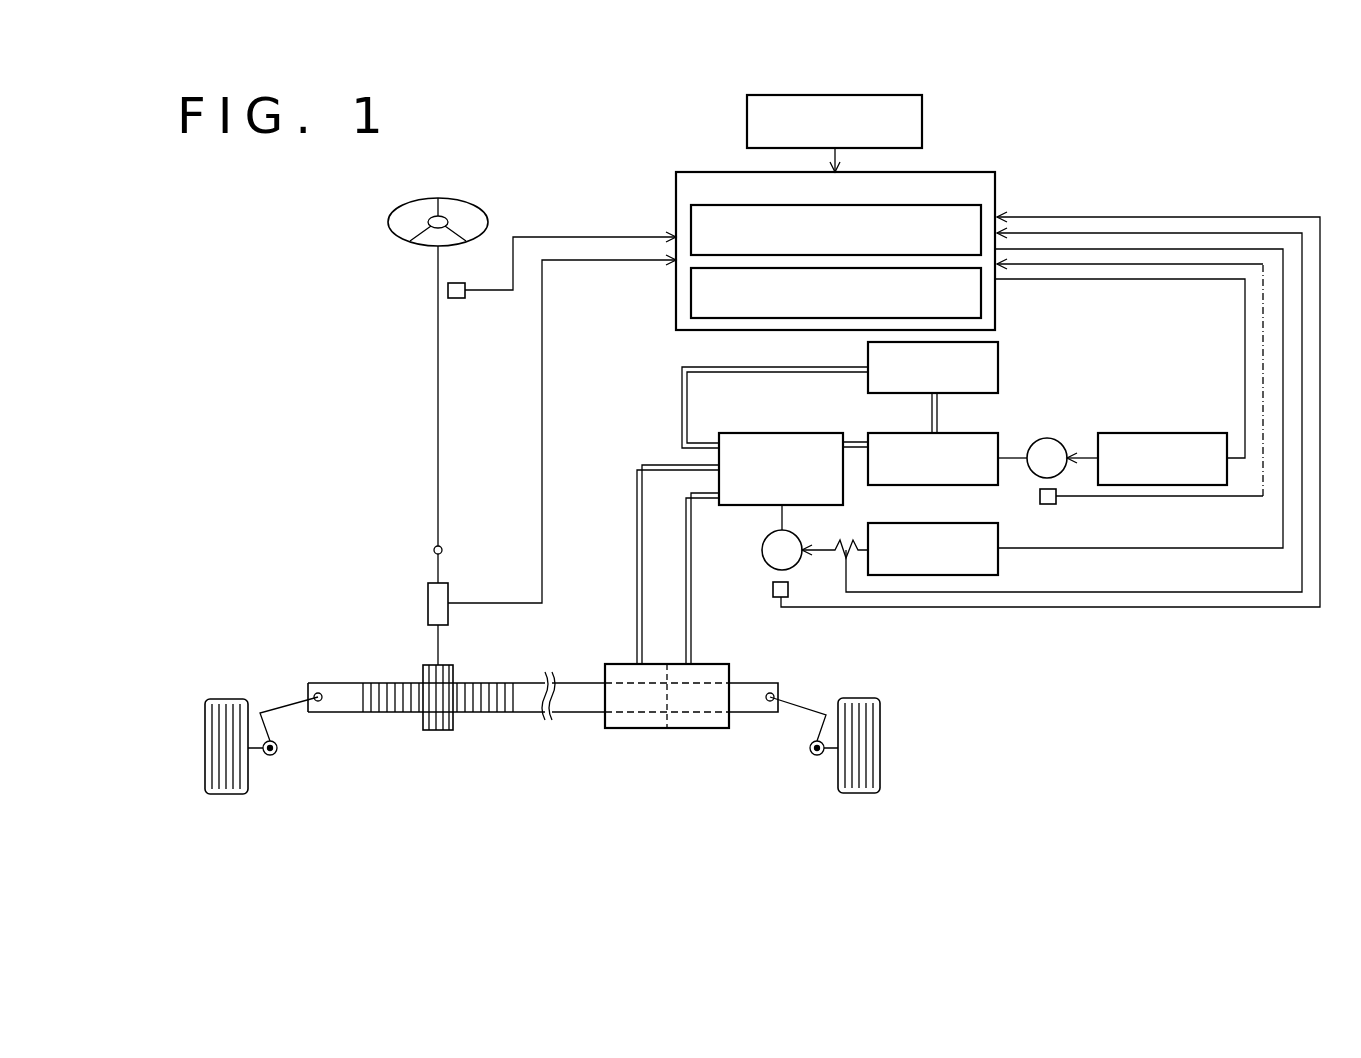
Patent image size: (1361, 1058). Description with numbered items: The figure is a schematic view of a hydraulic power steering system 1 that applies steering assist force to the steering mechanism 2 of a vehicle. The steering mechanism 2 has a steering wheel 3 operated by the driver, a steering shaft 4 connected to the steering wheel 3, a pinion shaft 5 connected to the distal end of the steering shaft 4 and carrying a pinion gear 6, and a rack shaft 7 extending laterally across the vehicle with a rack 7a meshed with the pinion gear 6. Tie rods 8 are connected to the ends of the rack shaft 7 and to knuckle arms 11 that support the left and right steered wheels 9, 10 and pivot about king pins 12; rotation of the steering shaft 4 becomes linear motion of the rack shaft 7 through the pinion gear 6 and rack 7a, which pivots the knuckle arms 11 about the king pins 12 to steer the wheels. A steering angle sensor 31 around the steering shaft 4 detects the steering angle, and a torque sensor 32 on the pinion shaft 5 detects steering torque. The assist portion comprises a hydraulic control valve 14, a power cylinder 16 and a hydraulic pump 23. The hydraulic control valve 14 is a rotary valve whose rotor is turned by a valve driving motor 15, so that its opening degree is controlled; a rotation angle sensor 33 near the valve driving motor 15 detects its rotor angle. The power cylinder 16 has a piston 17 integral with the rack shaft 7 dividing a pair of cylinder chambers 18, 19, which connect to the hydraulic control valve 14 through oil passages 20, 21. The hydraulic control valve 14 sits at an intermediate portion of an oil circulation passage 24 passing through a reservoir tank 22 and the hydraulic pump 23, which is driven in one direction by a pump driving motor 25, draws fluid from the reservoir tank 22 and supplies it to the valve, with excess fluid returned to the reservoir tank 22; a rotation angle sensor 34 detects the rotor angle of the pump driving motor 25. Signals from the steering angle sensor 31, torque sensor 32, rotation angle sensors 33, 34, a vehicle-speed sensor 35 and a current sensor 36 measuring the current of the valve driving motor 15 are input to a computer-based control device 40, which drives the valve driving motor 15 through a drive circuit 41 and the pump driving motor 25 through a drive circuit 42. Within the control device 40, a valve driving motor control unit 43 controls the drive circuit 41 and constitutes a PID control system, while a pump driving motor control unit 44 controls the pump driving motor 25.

The hydraulic power steering system 1 is at (300, 255).
The steering mechanism 2 is at (570, 722).
The steering wheel 3 is at (388, 223).
The steering shaft 4 is at (438, 380).
The pinion shaft 5 is at (438, 562).
The pinion gear 6 is at (437, 730).
The rack shaft 7 is at (527, 710).
The rack 7a is at (390, 703).
The tie rods 8 is at (287, 708).
The left steered wheel 9 is at (223, 795).
The right steered wheel 10 is at (860, 793).
The knuckle arms 11 is at (267, 760).
The king pins 12 is at (280, 762).
The hydraulic control valve 14 is at (768, 505).
The valve driving motor 15 is at (762, 550).
The power cylinder 16 is at (707, 663).
The piston 17 is at (667, 728).
The cylinder chamber 18 is at (628, 728).
The cylinder chamber 19 is at (707, 728).
The oil passage 20 is at (637, 565).
The oil passage 21 is at (692, 592).
The reservoir tank 22 is at (998, 363).
The hydraulic pump 23 is at (947, 432).
The oil circulation passage 24 is at (682, 405).
The pump driving motor 25 is at (1052, 440).
The steering angle sensor 31 is at (456, 298).
The torque sensor 32 is at (428, 603).
The rotation angle sensor 33 is at (773, 597).
The rotation angle sensor 34 is at (1048, 504).
The vehicle-speed sensor 35 is at (922, 118).
The current sensor 36 is at (838, 557).
The control device 40 is at (811, 239).
The drive circuit 41 is at (965, 523).
The drive circuit 42 is at (1115, 433).
The valve driving motor control unit 43 is at (691, 226).
The pump driving motor control unit 44 is at (691, 297).